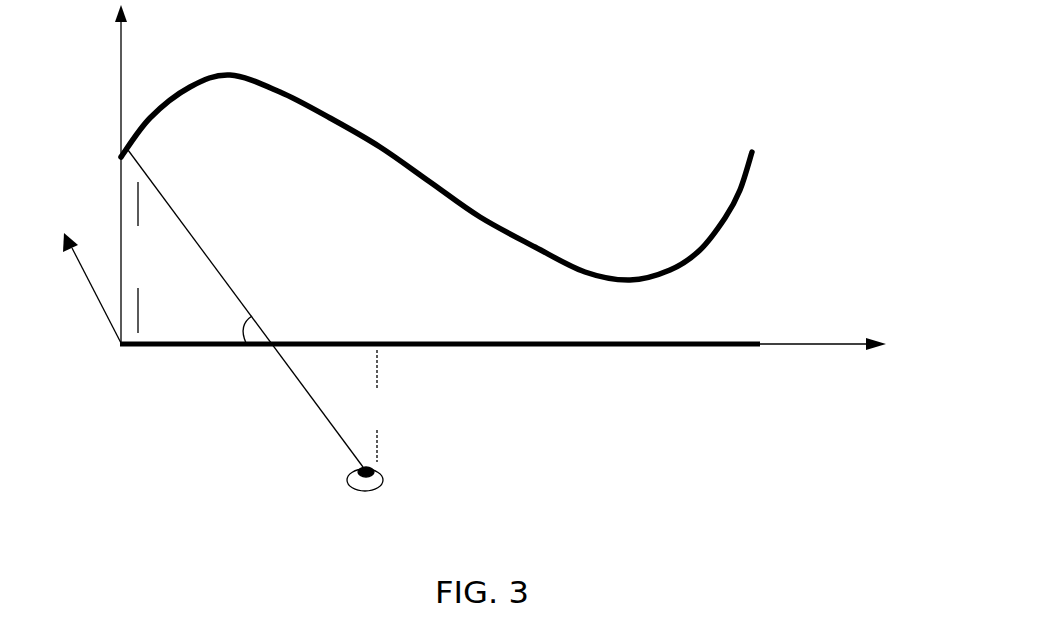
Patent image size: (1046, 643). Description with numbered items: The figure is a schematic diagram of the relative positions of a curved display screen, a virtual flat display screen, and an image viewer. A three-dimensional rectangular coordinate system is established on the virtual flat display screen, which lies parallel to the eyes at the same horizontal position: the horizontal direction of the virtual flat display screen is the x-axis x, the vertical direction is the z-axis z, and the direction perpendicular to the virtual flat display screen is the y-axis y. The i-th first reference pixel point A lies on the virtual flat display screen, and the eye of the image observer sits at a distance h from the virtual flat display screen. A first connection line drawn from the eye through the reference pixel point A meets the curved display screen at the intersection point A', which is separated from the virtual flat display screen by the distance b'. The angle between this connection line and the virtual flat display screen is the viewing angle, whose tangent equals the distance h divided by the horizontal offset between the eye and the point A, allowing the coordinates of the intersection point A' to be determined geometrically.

The intersection point A' is at (245, 304).
The first reference pixel point A is at (265, 361).
The distance between intersection point and virtual flat display screen b' is at (143, 257).
The distance between eyes and virtual flat display h is at (377, 406).
The x-axis x is at (520, 343).
The y-axis y is at (136, 174).
The z-axis z is at (80, 288).